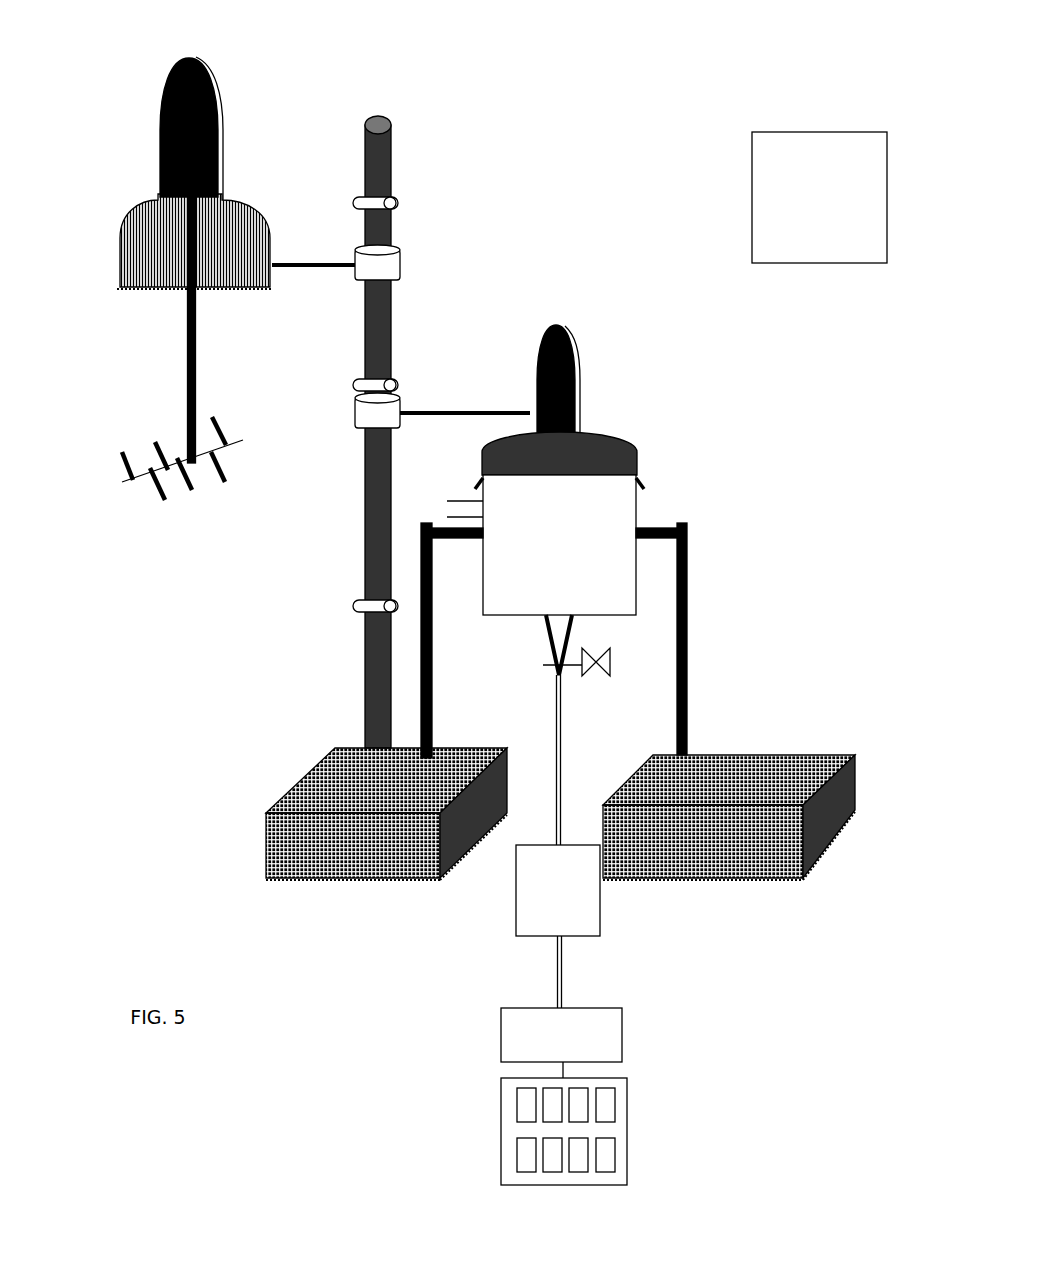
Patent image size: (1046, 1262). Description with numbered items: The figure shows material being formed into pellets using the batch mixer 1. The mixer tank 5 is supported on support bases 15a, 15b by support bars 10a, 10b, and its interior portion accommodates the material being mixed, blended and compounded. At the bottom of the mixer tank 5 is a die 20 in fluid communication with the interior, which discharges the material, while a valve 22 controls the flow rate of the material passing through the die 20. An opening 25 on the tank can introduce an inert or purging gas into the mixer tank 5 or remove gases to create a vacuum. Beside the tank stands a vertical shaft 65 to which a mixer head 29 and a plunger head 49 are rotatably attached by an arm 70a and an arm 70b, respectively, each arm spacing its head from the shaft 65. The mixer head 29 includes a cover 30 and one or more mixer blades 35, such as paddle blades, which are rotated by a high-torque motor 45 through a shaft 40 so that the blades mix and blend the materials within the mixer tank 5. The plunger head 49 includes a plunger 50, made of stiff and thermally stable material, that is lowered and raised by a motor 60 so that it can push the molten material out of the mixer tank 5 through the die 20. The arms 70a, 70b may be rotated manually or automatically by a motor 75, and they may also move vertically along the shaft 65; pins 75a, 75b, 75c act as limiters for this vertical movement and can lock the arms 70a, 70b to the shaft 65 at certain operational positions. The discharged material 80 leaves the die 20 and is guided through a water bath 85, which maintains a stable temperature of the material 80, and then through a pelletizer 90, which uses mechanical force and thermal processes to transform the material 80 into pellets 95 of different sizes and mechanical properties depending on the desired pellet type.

The batch mixer 1 is at (655, 185).
The mixer tank 5 is at (630, 520).
The support bar 10a is at (432, 667).
The support bar 10b is at (687, 702).
The support base 15a is at (308, 878).
The support base 15b is at (817, 870).
The die 20 is at (572, 630).
The valve 22 is at (600, 668).
The opening 25 is at (470, 498).
The mixer head 29 is at (110, 118).
The cover 30 is at (272, 228).
The mixer blades 35 is at (150, 465).
The shaft 40 is at (196, 370).
The high-torque motor 45 is at (210, 75).
The plunger head 49 is at (583, 330).
The plunger 50 is at (625, 442).
The motor 60 is at (578, 368).
The shaft 65 is at (388, 130).
The arm 70a is at (326, 265).
The arm 70b is at (482, 413).
The motor 75 is at (819, 197).
The pin 75a is at (398, 203).
The pin 75b is at (398, 385).
The pin 75c is at (353, 606).
The material 80 is at (557, 715).
The water bath 85 is at (516, 922).
The pelletizer 90 is at (501, 1038).
The pellets 95 is at (501, 1126).